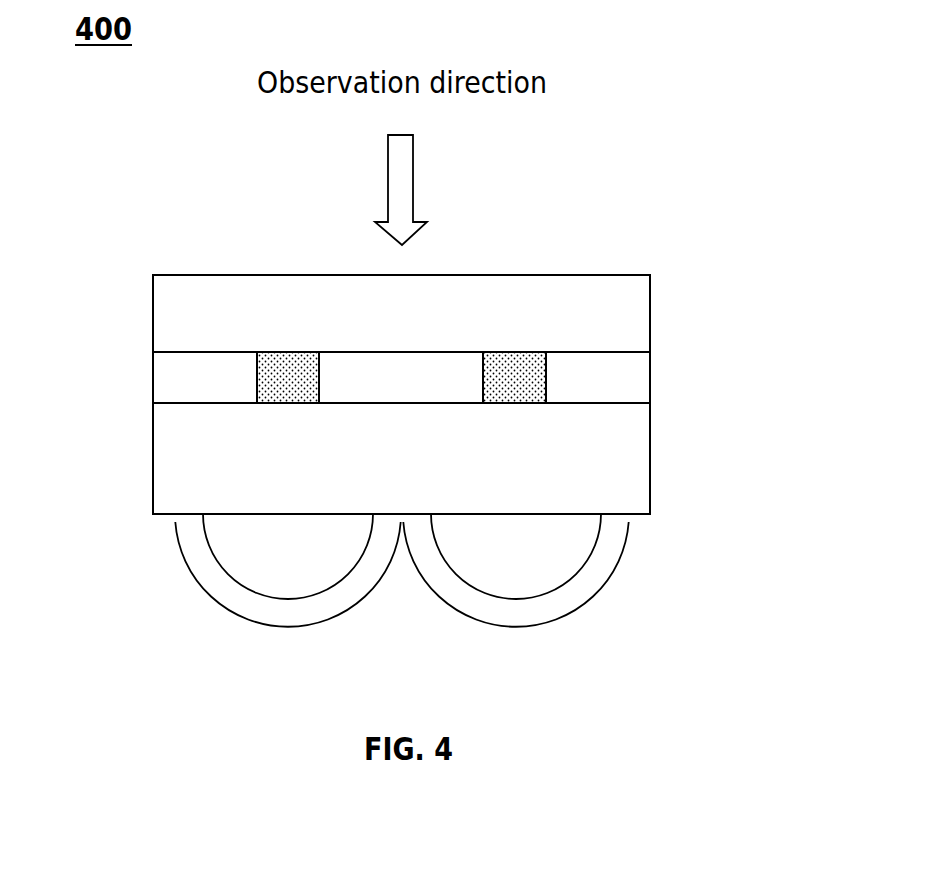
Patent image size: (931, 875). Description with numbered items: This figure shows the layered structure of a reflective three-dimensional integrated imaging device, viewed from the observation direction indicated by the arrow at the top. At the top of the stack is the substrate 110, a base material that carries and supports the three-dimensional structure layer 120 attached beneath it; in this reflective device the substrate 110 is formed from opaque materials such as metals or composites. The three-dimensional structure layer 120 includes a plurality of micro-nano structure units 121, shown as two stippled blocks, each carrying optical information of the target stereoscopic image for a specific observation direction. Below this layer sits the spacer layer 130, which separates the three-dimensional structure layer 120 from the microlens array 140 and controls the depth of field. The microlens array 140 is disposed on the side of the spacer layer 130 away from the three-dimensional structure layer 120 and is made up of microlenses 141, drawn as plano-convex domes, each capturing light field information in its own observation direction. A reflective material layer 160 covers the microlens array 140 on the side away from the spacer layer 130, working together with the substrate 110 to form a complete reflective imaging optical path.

The substrate 110 is at (650, 315).
The three-dimensional structure layer 120 is at (650, 378).
The micro-nano structure unit 121 is at (282, 383).
The spacer layer 130 is at (650, 470).
The microlens array 140 is at (434, 551).
The microlens 141 is at (218, 562).
The reflective material layer 160 is at (605, 587).